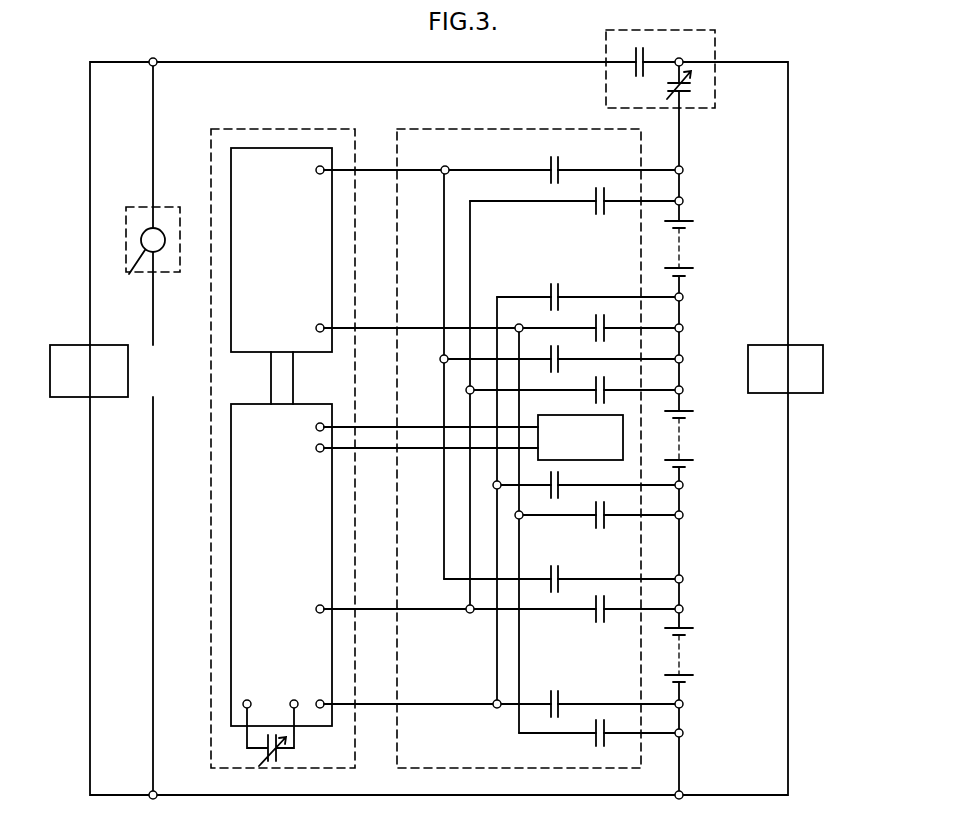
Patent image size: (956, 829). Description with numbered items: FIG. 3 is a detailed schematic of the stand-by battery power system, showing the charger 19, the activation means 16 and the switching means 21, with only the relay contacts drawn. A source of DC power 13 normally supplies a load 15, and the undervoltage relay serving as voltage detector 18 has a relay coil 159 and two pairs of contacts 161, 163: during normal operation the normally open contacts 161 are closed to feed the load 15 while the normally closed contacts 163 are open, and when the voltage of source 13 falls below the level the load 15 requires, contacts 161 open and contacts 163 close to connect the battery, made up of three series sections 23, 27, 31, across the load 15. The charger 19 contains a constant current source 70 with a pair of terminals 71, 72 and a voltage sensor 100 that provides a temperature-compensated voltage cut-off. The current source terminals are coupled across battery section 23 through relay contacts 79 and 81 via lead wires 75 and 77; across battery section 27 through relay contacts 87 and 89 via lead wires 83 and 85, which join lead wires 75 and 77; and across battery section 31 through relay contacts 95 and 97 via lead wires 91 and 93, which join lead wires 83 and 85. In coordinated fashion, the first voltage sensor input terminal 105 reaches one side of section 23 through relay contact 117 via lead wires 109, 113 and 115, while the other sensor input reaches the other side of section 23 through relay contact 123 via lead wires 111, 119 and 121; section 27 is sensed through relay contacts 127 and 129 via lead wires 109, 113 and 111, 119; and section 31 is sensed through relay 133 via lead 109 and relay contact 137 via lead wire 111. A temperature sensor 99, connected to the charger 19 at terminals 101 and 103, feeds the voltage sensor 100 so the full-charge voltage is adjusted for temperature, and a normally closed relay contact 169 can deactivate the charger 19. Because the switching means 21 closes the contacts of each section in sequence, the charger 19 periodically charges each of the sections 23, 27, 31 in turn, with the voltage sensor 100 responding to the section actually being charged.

The source of DC power 13 is at (58, 345).
The load 15 is at (823, 370).
The stand-by power activation means 16 is at (716, 32).
The voltage detector 18 is at (126, 207).
The charger 19 is at (240, 128).
The switching means 21 is at (522, 128).
The battery section 23 is at (688, 240).
The battery section 27 is at (688, 433).
The battery section 31 is at (688, 650).
The constant current source 70 is at (231, 311).
The current source terminal 71 is at (316, 171).
The current source output terminal 72 is at (316, 329).
The lead wire 75 is at (420, 170).
The lead wire 77 is at (418, 328).
The relay contact 79 is at (555, 157).
The relay contact 81 is at (600, 343).
The lead wire 83 is at (446, 364).
The lead wire 85 is at (566, 518).
The relay contact 87 is at (552, 347).
The relay contact 89 is at (600, 530).
The lead wire 91 is at (444, 532).
The lead wire 93 is at (519, 640).
The relay contact 95 is at (555, 566).
The relay contact 97 is at (600, 748).
The temperature sensor 99 is at (622, 480).
The voltage sensor 100 is at (232, 578).
The terminal 101 is at (316, 428).
The terminal 103 is at (316, 449).
The first voltage sensor input terminal 105 is at (316, 610).
The lead wire 109 is at (421, 613).
The lead wire 111 is at (430, 703).
The lead wire 113 is at (470, 596).
The lead wire 115 is at (470, 246).
The relay contact 117 is at (600, 216).
The lead wire 119 is at (497, 653).
The lead wire 121 is at (498, 405).
The relay contact 123 is at (555, 278).
The relay contact 127 is at (598, 380).
The relay contact 129 is at (557, 499).
The relay 133 is at (600, 624).
The relay contact 137 is at (555, 688).
The relay coil 159 is at (126, 276).
The normally open relay contacts 161 is at (641, 46).
The normally closed relay contacts 163 is at (666, 89).
The normally closed relay contact 169 is at (272, 766).